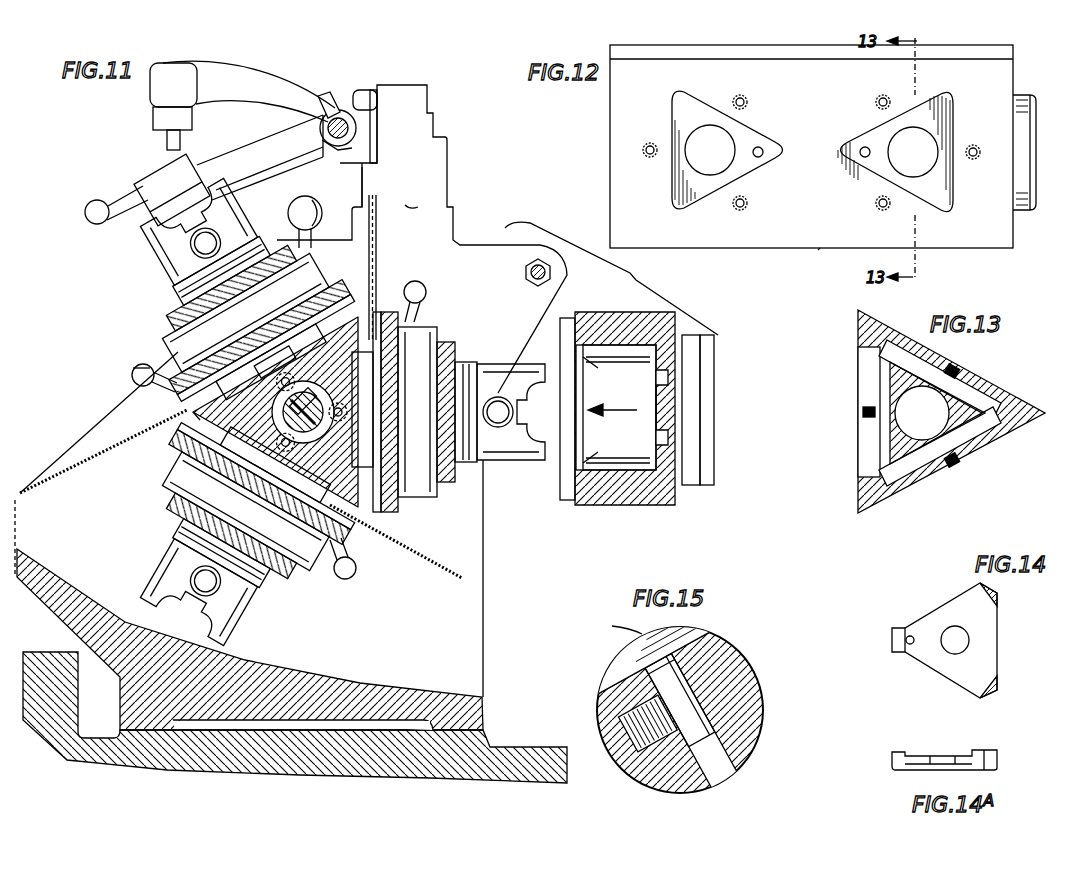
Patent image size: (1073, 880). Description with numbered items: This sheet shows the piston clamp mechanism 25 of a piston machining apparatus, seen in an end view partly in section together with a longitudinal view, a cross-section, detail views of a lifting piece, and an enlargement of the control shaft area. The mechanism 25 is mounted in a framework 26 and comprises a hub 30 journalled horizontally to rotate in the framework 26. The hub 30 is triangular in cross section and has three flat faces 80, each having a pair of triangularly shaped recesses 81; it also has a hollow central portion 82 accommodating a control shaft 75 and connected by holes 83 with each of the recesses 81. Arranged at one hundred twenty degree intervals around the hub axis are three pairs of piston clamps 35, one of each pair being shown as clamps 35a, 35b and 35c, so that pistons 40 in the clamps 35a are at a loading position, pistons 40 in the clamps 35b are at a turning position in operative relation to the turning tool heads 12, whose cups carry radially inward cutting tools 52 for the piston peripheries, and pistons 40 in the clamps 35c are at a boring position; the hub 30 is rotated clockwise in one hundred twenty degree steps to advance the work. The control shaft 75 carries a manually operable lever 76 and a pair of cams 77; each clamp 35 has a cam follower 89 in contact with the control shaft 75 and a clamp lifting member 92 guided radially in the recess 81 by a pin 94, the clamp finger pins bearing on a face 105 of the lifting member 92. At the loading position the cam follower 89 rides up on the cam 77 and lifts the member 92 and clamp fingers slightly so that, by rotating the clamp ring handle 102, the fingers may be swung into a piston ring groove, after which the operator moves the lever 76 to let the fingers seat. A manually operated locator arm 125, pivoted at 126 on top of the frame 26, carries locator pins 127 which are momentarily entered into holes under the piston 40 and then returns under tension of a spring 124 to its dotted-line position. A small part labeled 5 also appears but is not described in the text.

In FIG. 11, the cylinder 5 is at (364, 95).
In FIG. 11, the turning tool heads 12 is at (604, 316).
In FIG. 11, the piston clamp mechanism 25 is at (135, 405).
In FIG. 11, the framework 26 is at (435, 188).
In FIG. 11, the hub 30 is at (183, 418).
In FIG. 12, the hub 30 is at (818, 250).
In FIG. 13, the hub 30 is at (880, 318).
In FIG. 11, the piston clamps 35 is at (175, 320).
In FIG. 11, the clamps in loading position 35a is at (180, 352).
In FIG. 11, the clamps in turning position 35b is at (418, 318).
In FIG. 11, the clamps in boring position 35c is at (328, 553).
In FIG. 11, the pistons 40 is at (167, 258).
In FIG. 11, the cutting tools 52 is at (598, 410).
In FIG. 11, the control shaft 75 is at (333, 406).
In FIG. 15, the control shaft 75 is at (750, 672).
In FIG. 11, the lever 76 is at (316, 205).
In FIG. 11, the cams 77 is at (272, 348).
In FIG. 15, the cams 77 is at (617, 624).
In FIG. 12, the flat faces 80 is at (993, 240).
In FIG. 12, the recesses 81 is at (740, 180).
In FIG. 13, the recesses 81 is at (856, 368).
In FIG. 11, the hollow central portion 82 is at (350, 450).
In FIG. 13, the hollow central portion 82 is at (925, 440).
In FIG. 12, the holes 83 is at (915, 172).
In FIG. 13, the holes 83 is at (888, 430).
In FIG. 11, the cam follower 89 is at (325, 272).
In FIG. 14, the clamp lifting member 92 is at (983, 637).
In FIG. 14A, the clamp lifting member 92 is at (950, 753).
In FIG. 12, the pin 94 is at (867, 145).
In FIG. 13, the pin 94 is at (862, 413).
In FIG. 11, the handle 102 is at (133, 372).
In FIG. 14, the face 105 is at (992, 593).
In FIG. 14A, the face 105 is at (985, 751).
In FIG. 11, the spring 124 is at (370, 126).
In FIG. 11, the locator arm 125 is at (160, 160).
In FIG. 11, the pivot 126 is at (340, 160).
In FIG. 11, the locator pins 127 is at (166, 135).